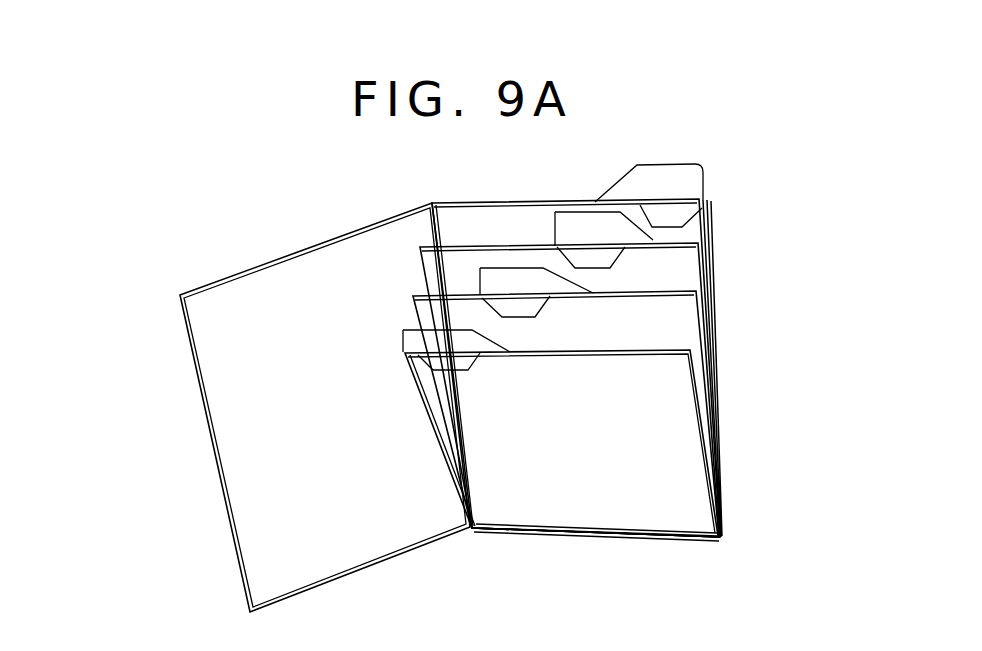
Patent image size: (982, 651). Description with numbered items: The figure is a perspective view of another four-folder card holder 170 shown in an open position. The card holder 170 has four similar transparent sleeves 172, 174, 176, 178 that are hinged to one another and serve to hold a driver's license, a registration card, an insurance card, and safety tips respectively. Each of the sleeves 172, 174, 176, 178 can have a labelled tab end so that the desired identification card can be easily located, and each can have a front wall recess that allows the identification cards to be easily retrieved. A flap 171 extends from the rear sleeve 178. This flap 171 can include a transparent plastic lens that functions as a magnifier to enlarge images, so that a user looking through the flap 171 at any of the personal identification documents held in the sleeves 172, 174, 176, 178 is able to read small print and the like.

The four-folder card holder 170 is at (177, 180).
The flap 171 is at (263, 528).
The hinged transparent sleeve 172 is at (663, 440).
The hinged transparent sleeve 174 is at (653, 332).
The hinged transparent sleeve 176 is at (664, 269).
The rear sleeve 178 is at (697, 205).